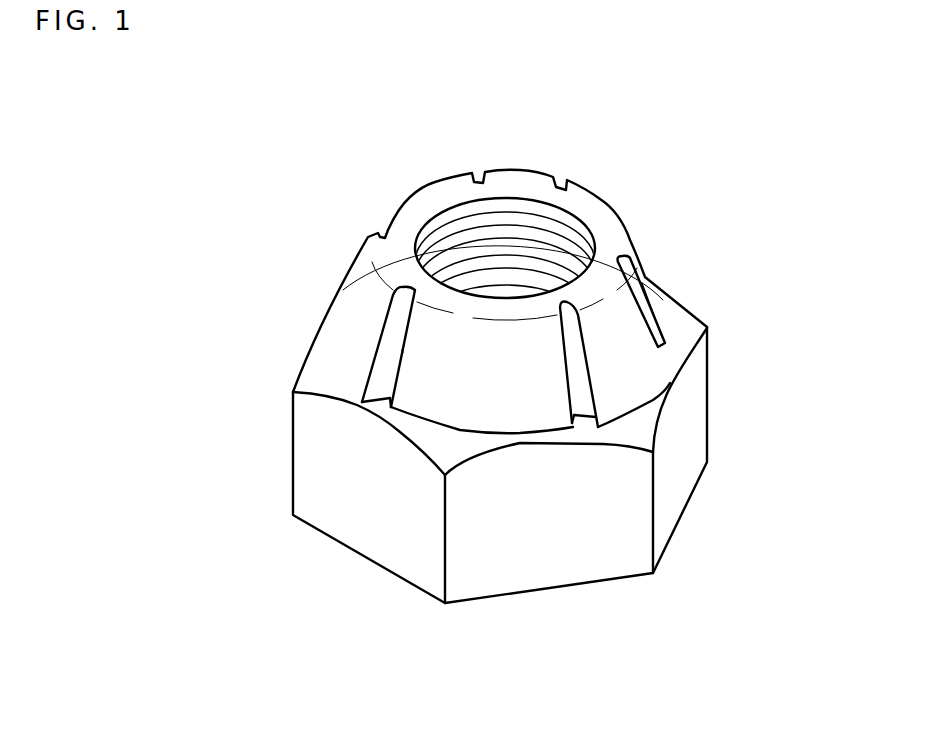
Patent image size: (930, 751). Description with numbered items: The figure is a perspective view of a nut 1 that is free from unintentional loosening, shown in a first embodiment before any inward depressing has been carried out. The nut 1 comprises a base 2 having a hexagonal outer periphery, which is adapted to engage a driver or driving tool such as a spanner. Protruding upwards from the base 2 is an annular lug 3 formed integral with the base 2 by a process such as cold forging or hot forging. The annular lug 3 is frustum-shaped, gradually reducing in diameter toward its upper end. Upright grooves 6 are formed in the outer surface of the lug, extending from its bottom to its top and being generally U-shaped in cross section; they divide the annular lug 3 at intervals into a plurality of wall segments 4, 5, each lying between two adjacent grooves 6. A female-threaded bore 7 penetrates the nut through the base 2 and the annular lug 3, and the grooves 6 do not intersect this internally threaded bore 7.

The nut 1 is at (723, 312).
The base 2 is at (292, 480).
The annular lug 3 is at (340, 282).
The wall segment 4 is at (535, 177).
The wall segment 5 is at (435, 183).
The grooves 6 is at (380, 232).
The internally threaded bore 7 is at (467, 198).